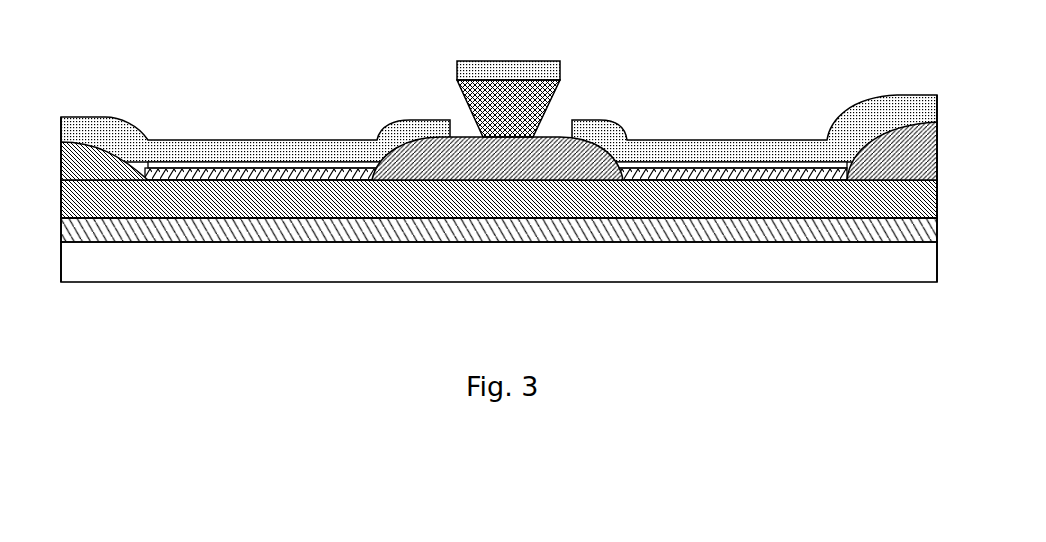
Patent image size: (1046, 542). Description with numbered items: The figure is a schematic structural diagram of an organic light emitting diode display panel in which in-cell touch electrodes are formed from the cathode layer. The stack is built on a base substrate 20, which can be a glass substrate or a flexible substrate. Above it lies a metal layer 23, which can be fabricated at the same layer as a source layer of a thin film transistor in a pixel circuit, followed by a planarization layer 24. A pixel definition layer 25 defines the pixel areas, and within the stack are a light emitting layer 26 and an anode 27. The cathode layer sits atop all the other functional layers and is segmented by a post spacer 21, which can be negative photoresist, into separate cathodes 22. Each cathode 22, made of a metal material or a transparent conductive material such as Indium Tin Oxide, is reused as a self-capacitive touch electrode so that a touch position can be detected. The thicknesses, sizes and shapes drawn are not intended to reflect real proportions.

The base substrate 20 is at (122, 272).
The post spacer 21 is at (503, 80).
The cathode 22 is at (703, 162).
The metal layer 23 is at (287, 227).
The planarization layer 24 is at (507, 217).
The pixel definition layer 25 is at (912, 170).
The light emitting layer 26 is at (182, 162).
The anode 27 is at (260, 178).